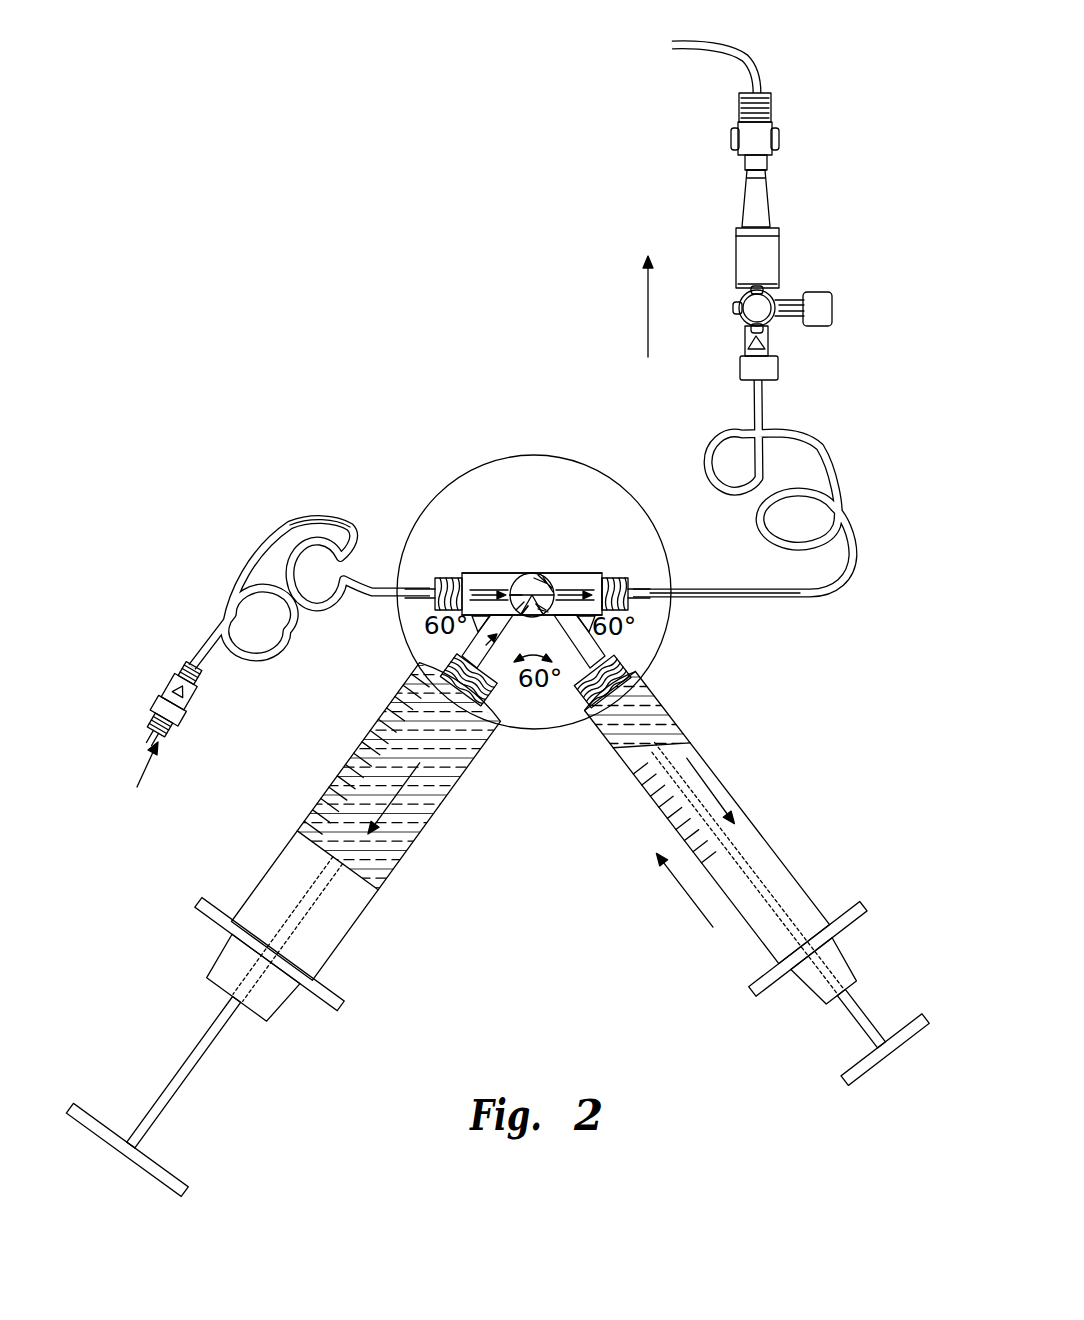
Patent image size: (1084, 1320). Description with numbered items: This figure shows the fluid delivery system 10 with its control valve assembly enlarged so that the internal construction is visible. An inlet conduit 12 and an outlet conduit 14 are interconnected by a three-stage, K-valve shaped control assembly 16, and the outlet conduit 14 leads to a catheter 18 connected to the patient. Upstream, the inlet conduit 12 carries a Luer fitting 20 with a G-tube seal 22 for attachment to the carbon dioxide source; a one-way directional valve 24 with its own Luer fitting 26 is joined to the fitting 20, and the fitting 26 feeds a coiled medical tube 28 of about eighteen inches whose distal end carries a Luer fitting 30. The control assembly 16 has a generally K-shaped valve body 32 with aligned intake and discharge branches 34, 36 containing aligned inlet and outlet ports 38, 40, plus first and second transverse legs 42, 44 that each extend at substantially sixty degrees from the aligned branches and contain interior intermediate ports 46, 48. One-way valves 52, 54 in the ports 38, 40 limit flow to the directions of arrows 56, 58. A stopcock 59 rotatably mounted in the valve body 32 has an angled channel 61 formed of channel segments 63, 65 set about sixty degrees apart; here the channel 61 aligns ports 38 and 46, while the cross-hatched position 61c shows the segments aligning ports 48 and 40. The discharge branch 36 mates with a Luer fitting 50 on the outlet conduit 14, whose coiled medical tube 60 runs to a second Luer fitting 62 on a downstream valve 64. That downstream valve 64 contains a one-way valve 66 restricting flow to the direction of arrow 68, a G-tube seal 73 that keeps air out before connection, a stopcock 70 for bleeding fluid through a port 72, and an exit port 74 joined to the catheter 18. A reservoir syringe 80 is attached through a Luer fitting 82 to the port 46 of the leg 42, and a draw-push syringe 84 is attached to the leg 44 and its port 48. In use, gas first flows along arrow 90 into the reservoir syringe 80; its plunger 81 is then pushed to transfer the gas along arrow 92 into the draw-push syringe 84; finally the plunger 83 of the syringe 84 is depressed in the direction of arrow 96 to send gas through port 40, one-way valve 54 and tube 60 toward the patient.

The system 10 is at (266, 492).
The inlet conduit 12 is at (225, 556).
The outlet conduit 14 is at (706, 440).
The three-stage K-valve shaped control assembly 16 is at (472, 574).
The catheter 18 is at (716, 142).
The Luer fitting 20 is at (160, 710).
The G-tube seal 22 is at (166, 735).
The one-way directional valve 24 is at (152, 666).
The Luer fitting 26 is at (181, 670).
The coiled medical tube 28 is at (343, 518).
The Luer fitting 30 is at (495, 564).
The K-shaped valve body 32 is at (582, 574).
The intake segment 34 is at (510, 574).
The discharge segment 36 is at (612, 578).
The inlet port 38 is at (442, 574).
The outlet port 40 is at (573, 574).
The first transverse leg 42 is at (528, 748).
The second transverse leg 44 is at (580, 723).
The interior intermediate port 46 is at (410, 657).
The interior intermediate port 48 is at (657, 673).
The Luer fitting 50 is at (636, 588).
The one-way valve 52 is at (436, 574).
The one-way valve 54 is at (624, 580).
The arrow 56 is at (453, 574).
The arrow 58 is at (600, 576).
The stopcock 59 is at (547, 574).
The angled channel 61 is at (533, 574).
The angled channel position 61c is at (560, 574).
The channel segment 63 is at (522, 574).
The coiled medical tube 60 is at (771, 602).
The second Luer fitting 62 is at (741, 372).
The downstream valve 64 is at (824, 259).
The channel segment 65 is at (400, 642).
The one-way valve 66 is at (768, 342).
The arrow 68 is at (647, 303).
The stopcock 70 is at (757, 308).
The port 72 is at (818, 288).
The G-tube seal 73 is at (815, 327).
The exit port 74 is at (779, 233).
The reservoir syringe 80 is at (288, 902).
The plunger 81 is at (205, 1050).
The Luer fitting 82 is at (407, 662).
The plunger 83 is at (855, 1023).
The draw-push syringe 84 is at (724, 876).
The arrow 90 is at (518, 722).
The arrow 92 is at (700, 787).
The arrow 96 is at (687, 897).